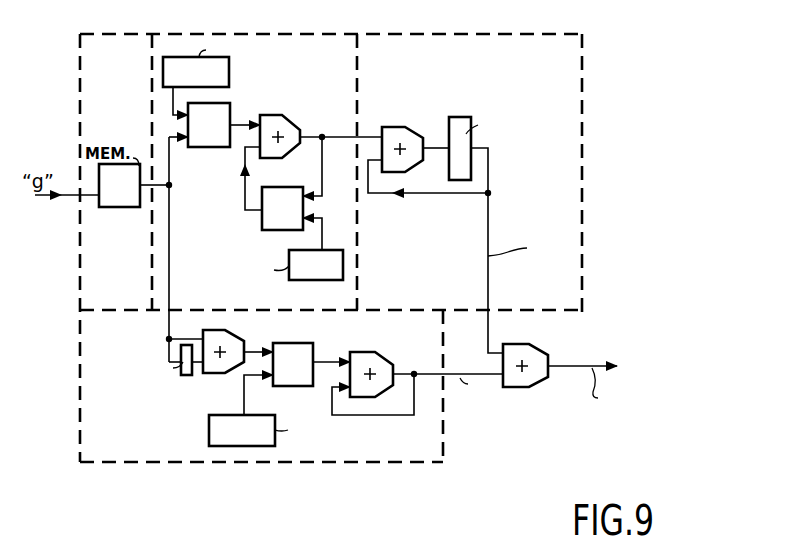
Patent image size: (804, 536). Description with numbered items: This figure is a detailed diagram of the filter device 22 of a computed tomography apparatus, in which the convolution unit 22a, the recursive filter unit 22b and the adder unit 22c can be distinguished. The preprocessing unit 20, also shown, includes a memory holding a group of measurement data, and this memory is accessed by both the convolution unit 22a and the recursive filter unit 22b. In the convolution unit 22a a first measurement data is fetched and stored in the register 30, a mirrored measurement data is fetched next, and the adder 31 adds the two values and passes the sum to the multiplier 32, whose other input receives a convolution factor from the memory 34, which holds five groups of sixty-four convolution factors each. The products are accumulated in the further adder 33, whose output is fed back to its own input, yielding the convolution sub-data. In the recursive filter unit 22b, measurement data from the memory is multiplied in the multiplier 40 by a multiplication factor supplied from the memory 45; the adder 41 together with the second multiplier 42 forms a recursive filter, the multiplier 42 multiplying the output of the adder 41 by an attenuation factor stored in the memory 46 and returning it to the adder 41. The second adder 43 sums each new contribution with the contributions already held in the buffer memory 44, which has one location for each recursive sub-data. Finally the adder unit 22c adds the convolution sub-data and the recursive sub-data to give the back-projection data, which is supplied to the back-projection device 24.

The preprocessing unit 20 is at (110, 62).
The filter device 22 is at (592, 87).
The convolution unit 22a is at (306, 441).
The recursive filter unit 22b is at (412, 60).
The adder unit 22c is at (520, 388).
The back-projection device 24 is at (598, 375).
The register 30 is at (182, 378).
The adder 31 is at (222, 375).
The multiplier 32 is at (314, 352).
The further adder 33 is at (386, 352).
The convolution factor memory 34 is at (209, 432).
The multiplier 40 is at (232, 118).
The adder 41 is at (288, 116).
The second multiplier 42 is at (260, 226).
The second adder 43 is at (396, 127).
The buffer memory 44 is at (460, 117).
The memory 45 is at (188, 57).
The memory 46 is at (296, 281).